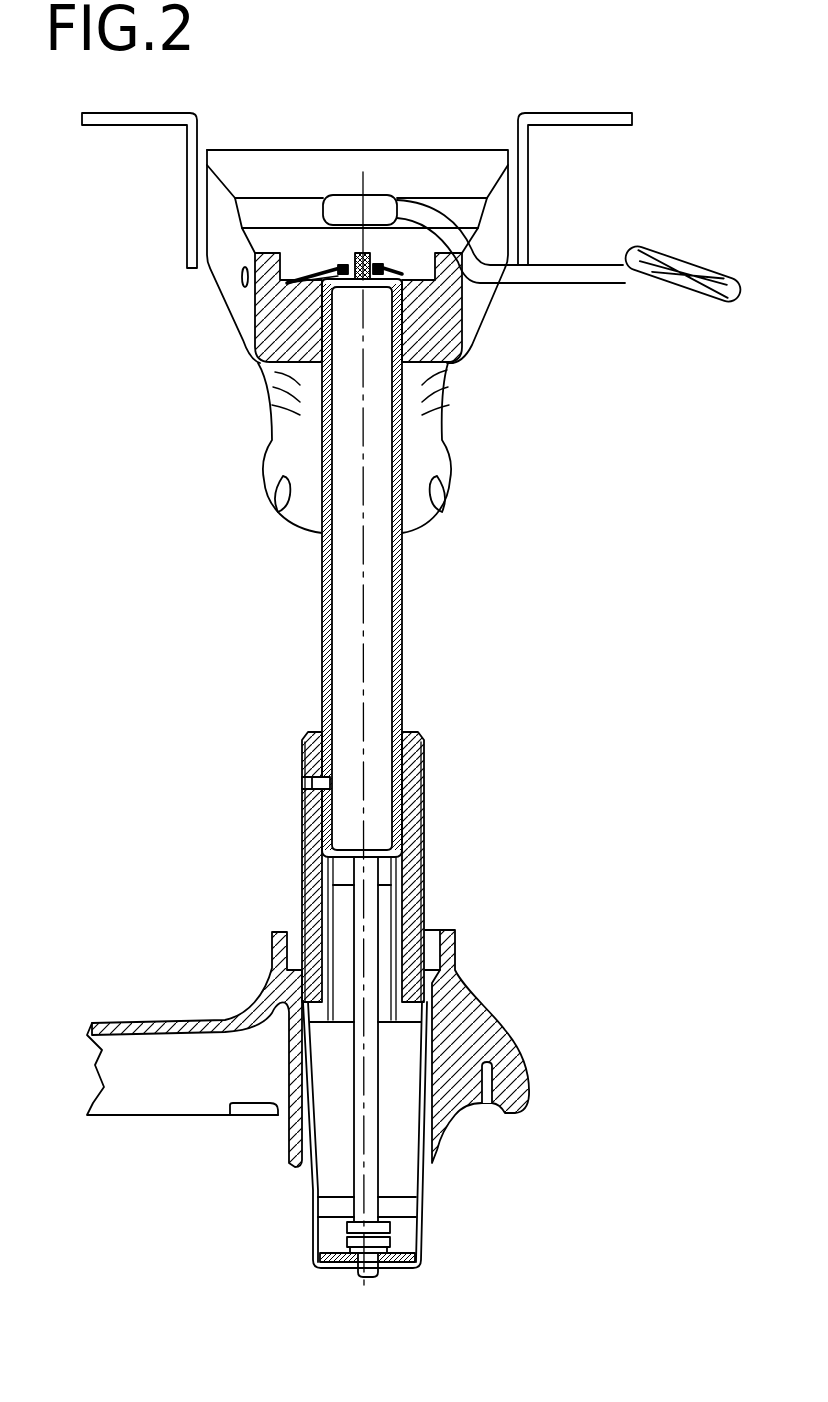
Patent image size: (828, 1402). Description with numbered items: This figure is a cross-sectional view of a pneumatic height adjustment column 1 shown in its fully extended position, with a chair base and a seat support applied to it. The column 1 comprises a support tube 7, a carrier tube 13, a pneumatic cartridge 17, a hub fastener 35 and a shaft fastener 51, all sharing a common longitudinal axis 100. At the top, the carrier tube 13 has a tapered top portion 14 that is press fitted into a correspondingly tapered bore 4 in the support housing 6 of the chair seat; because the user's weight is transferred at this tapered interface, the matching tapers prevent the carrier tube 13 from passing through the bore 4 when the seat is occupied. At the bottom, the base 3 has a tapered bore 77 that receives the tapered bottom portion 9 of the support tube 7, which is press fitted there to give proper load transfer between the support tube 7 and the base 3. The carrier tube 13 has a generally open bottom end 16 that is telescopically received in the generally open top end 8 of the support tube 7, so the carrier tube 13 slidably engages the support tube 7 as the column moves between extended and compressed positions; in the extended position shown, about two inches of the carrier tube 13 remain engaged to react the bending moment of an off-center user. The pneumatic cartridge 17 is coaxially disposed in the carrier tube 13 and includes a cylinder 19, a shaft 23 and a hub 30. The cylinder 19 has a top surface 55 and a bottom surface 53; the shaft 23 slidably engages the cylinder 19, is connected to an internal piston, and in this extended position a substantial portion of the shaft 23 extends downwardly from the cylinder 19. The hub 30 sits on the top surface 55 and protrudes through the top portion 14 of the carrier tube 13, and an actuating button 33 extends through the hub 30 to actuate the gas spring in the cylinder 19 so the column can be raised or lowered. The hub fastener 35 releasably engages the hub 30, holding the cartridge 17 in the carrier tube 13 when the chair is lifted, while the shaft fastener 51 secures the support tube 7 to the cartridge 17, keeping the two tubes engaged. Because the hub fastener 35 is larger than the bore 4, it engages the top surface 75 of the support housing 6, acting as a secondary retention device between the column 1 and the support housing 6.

The pneumatic height adjustment column 1 is at (316, 613).
The base 3 is at (170, 1078).
The tapered bore 4 is at (297, 332).
The support housing 6 is at (443, 323).
The support tube 7 is at (425, 793).
The top end 8 is at (407, 732).
The bottom portion 9 is at (293, 1117).
The carrier tube 13 is at (403, 600).
The top portion 14 is at (448, 305).
The bottom end 16 is at (391, 887).
The pneumatic cartridge 17 is at (367, 569).
The cylinder 19 is at (373, 650).
The shaft 23 is at (368, 1108).
The hub 30 is at (369, 265).
The actuating button 33 is at (354, 250).
The hub fastener 35 is at (316, 258).
The shaft fastener 51 is at (352, 1278).
The bottom surface 53 is at (347, 853).
The top surface 55 is at (322, 293).
The top surface 75 is at (415, 272).
The tapered bore 77 is at (312, 1012).
The longitudinal axis 100 is at (362, 172).